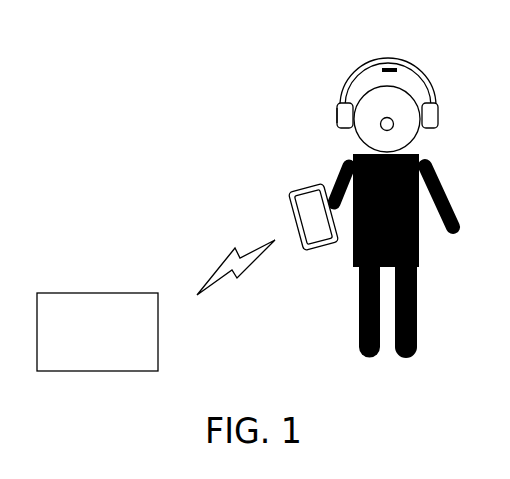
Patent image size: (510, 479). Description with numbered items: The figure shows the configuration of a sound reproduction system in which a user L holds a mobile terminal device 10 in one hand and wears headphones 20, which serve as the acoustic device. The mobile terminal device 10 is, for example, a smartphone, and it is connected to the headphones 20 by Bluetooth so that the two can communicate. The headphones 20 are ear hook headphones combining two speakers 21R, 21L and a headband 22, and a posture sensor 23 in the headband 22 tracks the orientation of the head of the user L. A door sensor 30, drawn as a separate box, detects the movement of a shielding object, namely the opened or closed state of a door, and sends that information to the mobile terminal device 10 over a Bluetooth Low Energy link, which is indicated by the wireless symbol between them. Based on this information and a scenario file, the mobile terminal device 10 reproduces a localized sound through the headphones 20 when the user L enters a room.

The mobile terminal device 10 is at (289, 194).
The headphones 20 is at (426, 32).
The speaker 21R is at (353, 100).
The speaker 21L is at (422, 100).
The headband 22 is at (342, 100).
The posture sensor 23 is at (390, 67).
The door sensor 30 is at (158, 293).
The user L is at (443, 198).